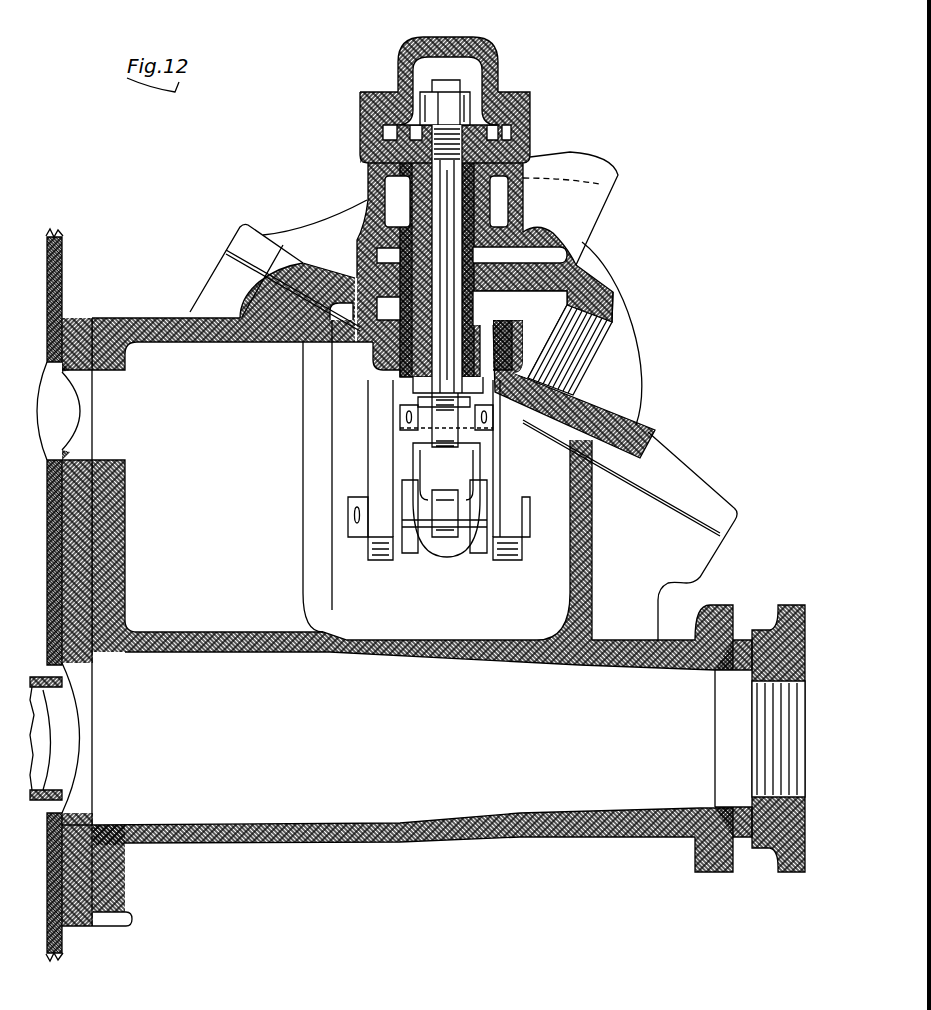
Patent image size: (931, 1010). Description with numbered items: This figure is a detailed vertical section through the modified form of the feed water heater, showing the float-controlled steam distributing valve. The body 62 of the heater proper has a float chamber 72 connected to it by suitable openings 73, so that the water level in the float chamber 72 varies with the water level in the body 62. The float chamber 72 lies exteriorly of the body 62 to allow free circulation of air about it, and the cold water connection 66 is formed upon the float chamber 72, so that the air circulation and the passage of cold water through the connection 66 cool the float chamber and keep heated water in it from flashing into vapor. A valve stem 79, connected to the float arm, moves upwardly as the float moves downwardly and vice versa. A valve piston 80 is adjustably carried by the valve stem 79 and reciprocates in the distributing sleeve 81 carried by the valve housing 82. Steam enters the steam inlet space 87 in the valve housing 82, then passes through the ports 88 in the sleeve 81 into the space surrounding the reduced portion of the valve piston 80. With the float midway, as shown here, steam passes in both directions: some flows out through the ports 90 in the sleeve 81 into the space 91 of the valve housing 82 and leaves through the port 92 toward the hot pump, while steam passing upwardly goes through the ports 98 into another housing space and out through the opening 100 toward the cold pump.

The body 62 is at (65, 279).
The cold water connection 66 is at (408, 808).
The float chamber 72 is at (553, 596).
The openings 73 is at (121, 373).
The valve stem 79 is at (440, 382).
The valve piston 80 is at (411, 167).
The distributing sleeve 81 is at (483, 163).
The valve housing 82 is at (531, 145).
The steam inlet space 87 is at (525, 258).
The ports 88 is at (547, 238).
The ports 90 is at (563, 311).
The space 91 is at (612, 297).
The port 92 is at (602, 323).
The ports 98 is at (487, 202).
The opening 100 is at (608, 207).